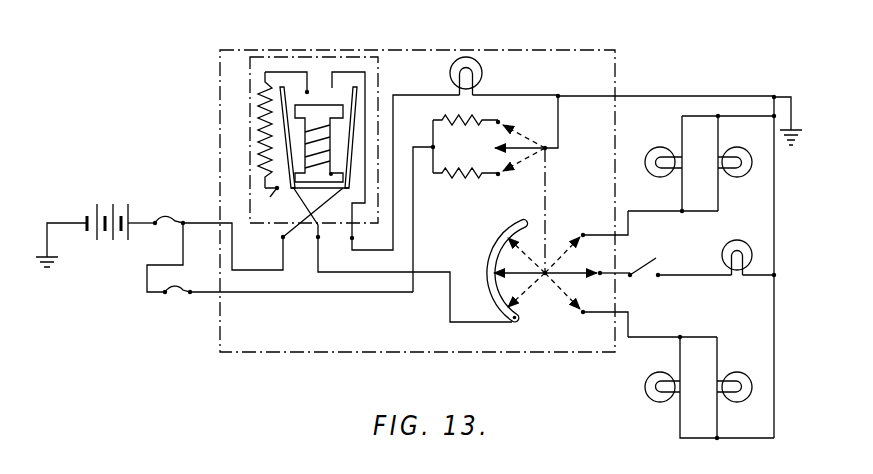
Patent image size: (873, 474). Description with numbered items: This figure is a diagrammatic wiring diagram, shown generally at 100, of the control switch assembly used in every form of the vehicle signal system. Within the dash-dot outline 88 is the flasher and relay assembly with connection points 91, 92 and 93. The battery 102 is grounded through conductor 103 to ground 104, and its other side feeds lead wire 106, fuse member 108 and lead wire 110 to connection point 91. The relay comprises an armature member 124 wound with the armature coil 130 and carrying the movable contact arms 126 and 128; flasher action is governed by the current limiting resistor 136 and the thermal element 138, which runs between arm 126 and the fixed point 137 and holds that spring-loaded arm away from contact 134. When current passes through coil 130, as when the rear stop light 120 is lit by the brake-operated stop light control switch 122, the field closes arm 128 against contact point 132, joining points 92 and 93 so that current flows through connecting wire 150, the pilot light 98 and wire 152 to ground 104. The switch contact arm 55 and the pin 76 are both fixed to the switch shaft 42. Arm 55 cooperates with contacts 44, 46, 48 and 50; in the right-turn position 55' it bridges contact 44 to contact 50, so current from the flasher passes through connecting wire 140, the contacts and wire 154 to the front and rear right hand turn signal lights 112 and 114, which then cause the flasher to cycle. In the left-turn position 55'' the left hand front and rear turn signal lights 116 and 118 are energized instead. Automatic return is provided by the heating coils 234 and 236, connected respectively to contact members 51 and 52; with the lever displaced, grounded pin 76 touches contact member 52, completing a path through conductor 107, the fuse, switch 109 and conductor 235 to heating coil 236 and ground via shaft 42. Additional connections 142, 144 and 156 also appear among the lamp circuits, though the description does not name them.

The wiring diagram of the control switch assembly 100 is at (452, 45).
The outline of the flasher and relay assembly 88 is at (383, 58).
The conductor 103 is at (78, 222).
The ground 104 is at (52, 266).
The battery 102 is at (128, 204).
The lead wire 106 is at (144, 226).
The fuse member 108 is at (186, 206).
The lead wire 110 is at (196, 228).
The conductor 107 is at (147, 283).
The switch 109 is at (180, 296).
The thermal element 138 is at (262, 108).
The fixed point 137 is at (271, 203).
The contact 134 is at (295, 86).
The contact point 132 is at (341, 86).
The current limiting resistor 136 is at (281, 122).
The movable contact arm 126 is at (287, 160).
The movable contact arm 128 is at (356, 130).
The armature member 124 is at (326, 106).
The armature coil 130 is at (319, 154).
The connection point 91 is at (283, 238).
The connection point 92 is at (317, 236).
The connection point 93 is at (353, 238).
The conductor 235 is at (414, 216).
The connecting wire 140 is at (418, 270).
The pilot light 98 is at (488, 68).
The connecting wire 150 is at (432, 95).
The wire 152 is at (658, 97).
The heating coil 234 is at (448, 118).
The heating coil 236 is at (450, 174).
The contact member 51 is at (503, 109).
The contact member 52 is at (499, 175).
The pin 76 is at (500, 148).
The switch shaft 42 is at (547, 206).
The contact 44 is at (493, 295).
The switch contact arm 55 is at (507, 251).
The left-turn position of switch member 55'' is at (526, 237).
The right-turn position of switch member 55' is at (529, 297).
The contact 50 is at (583, 234).
The contact 48 is at (600, 273).
The contact 46 is at (584, 311).
The wire 154 is at (648, 211).
The conductor 156 is at (742, 115).
The front right hand turn signal light 112 is at (656, 128).
The rear right hand turn signal light 114 is at (746, 139).
The switch contact 142 is at (630, 278).
The stop light control switch 122 is at (640, 270).
The conductor 144 is at (696, 276).
The rear stop light 120 is at (736, 240).
The front left hand turn signal light 116 is at (654, 401).
The rear left hand turn signal light 118 is at (748, 399).